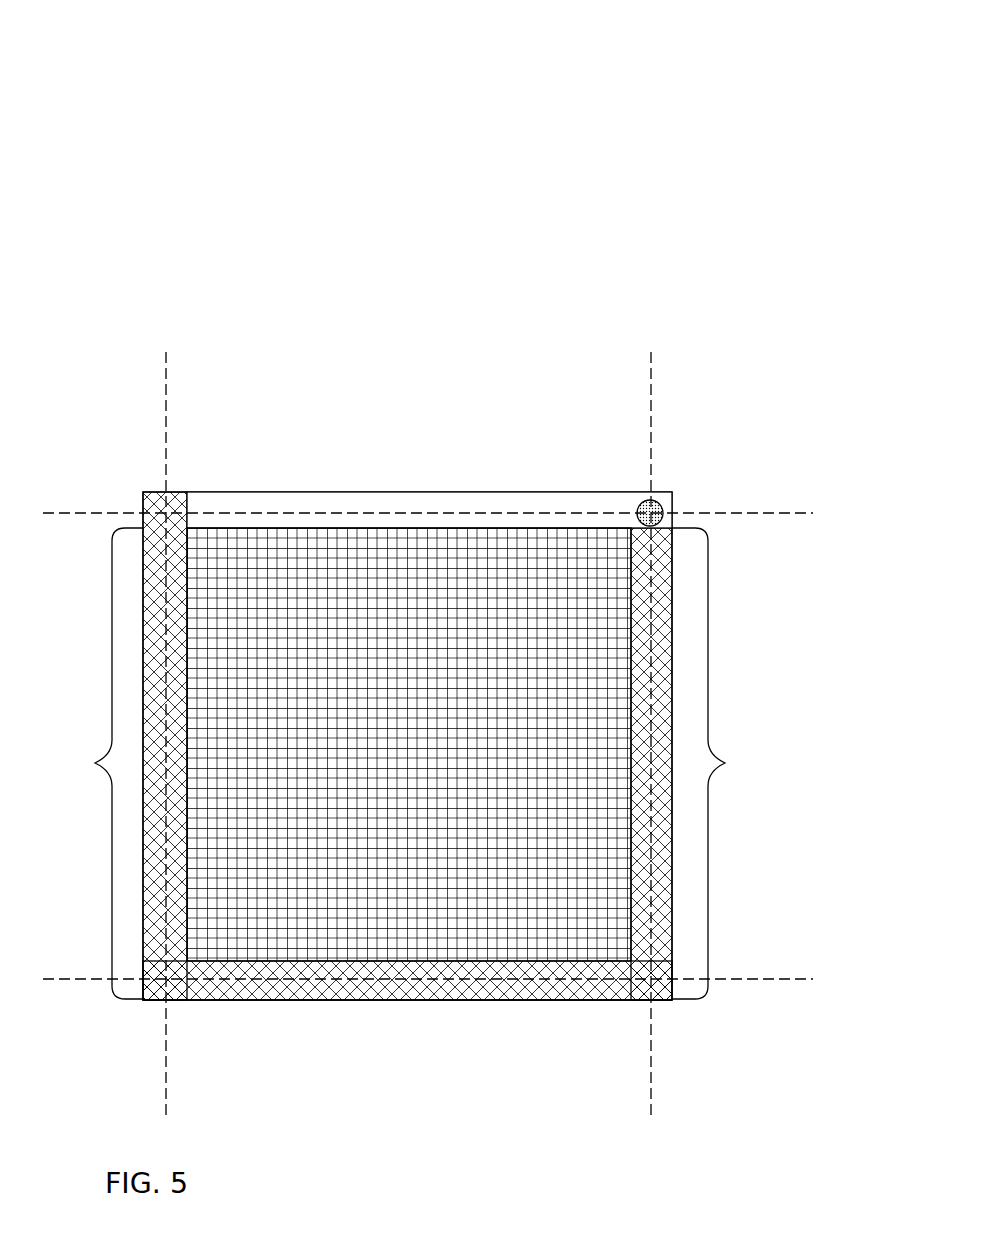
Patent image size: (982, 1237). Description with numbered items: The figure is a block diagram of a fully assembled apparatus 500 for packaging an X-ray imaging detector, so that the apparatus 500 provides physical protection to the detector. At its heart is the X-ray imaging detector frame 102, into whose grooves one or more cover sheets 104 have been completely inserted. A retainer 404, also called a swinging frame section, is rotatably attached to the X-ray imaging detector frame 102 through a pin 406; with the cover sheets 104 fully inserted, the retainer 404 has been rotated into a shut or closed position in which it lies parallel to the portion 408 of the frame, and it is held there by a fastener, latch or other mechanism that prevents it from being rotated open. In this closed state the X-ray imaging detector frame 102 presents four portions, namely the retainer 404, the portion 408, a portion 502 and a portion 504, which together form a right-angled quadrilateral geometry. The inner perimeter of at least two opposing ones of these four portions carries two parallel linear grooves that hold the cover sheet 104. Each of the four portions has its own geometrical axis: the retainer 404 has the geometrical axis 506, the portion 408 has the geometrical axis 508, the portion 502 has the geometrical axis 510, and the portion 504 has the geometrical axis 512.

The fully assembled apparatus 500 is at (810, 31).
The X-ray imaging detector frame 102 is at (438, 1002).
The retainer 404 is at (503, 515).
The cover sheet 104 is at (425, 768).
The pin 406 is at (660, 516).
The portion 408 is at (535, 1000).
The portion 502 is at (98, 763).
The portion 504 is at (721, 763).
The geometrical axis 506 is at (737, 513).
The geometrical axis 508 is at (747, 979).
The geometrical axis 510 is at (166, 1077).
The geometrical axis 512 is at (651, 1077).